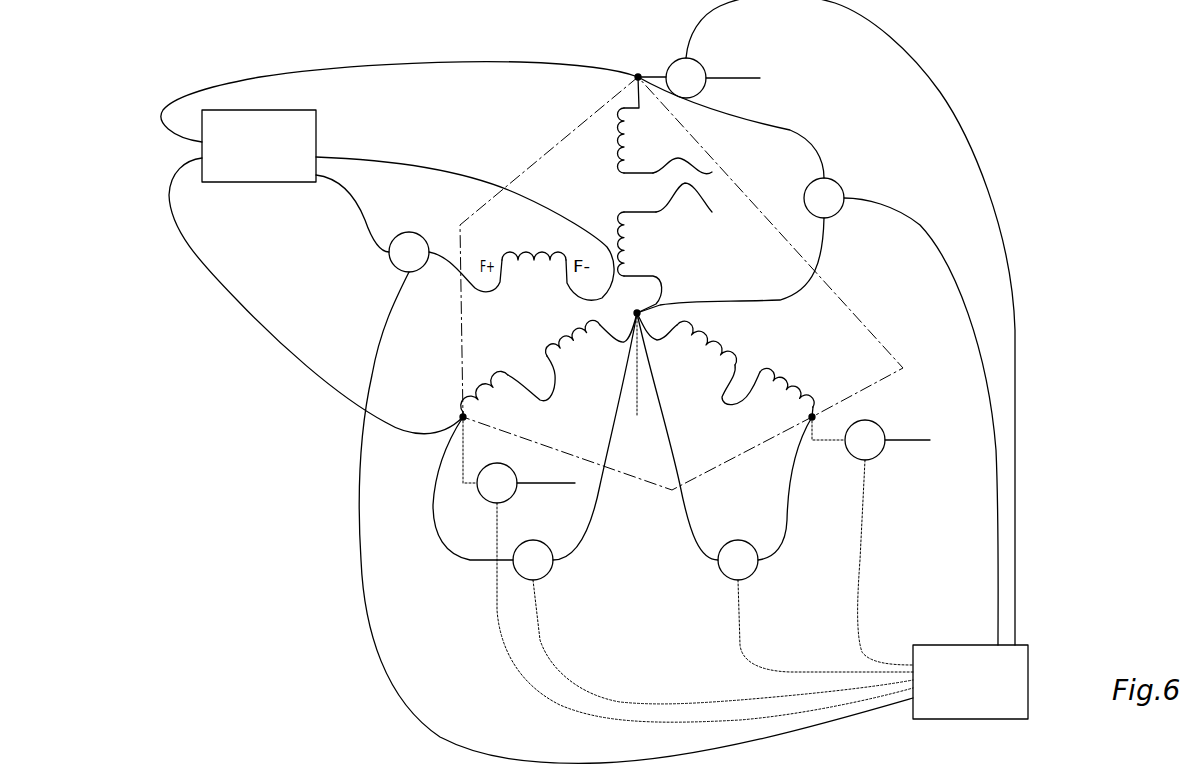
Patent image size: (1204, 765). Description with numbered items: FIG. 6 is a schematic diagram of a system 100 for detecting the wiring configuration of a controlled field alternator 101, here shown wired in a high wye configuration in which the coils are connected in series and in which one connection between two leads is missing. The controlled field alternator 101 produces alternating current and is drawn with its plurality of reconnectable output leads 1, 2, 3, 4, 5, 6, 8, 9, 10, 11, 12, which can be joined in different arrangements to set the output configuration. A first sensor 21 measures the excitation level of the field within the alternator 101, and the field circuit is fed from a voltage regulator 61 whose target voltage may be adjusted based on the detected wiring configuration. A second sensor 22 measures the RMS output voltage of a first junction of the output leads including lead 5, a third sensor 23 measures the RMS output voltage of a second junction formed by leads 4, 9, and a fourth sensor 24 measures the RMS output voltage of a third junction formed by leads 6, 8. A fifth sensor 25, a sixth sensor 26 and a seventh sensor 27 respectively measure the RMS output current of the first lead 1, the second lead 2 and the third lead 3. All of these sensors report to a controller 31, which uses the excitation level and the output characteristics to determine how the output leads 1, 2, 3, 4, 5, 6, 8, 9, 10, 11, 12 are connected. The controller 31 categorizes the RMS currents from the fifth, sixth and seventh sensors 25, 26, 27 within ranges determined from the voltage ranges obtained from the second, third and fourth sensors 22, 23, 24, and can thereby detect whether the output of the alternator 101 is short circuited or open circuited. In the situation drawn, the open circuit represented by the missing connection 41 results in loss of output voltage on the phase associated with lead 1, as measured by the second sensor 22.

The system 100 is at (1008, 43).
The controlled field alternator 101 is at (843, 291).
The first reconnectable output lead 1 is at (639, 86).
The second reconnectable output lead 2 is at (473, 482).
The third reconnectable output lead 3 is at (794, 483).
The reconnectable output lead 4 is at (638, 210).
The missing connection 41 is at (712, 201).
The reconnectable output lead 5 is at (530, 368).
The reconnectable output lead 6 is at (745, 369).
The reconnectable output lead 8 is at (531, 377).
The reconnectable output lead 9 is at (741, 379).
The reconnectable output lead 10 is at (638, 361).
The reconnectable output lead 11 is at (618, 325).
The reconnectable output lead 12 is at (657, 325).
The first sensor 21 is at (409, 232).
The second sensor 22 is at (803, 199).
The third sensor 23 is at (533, 540).
The fourth sensor 24 is at (738, 540).
The fifth sensor 25 is at (672, 64).
The sixth sensor 26 is at (487, 498).
The seventh sensor 27 is at (851, 455).
The controller 31 is at (960, 645).
The voltage regulator 61 is at (318, 121).